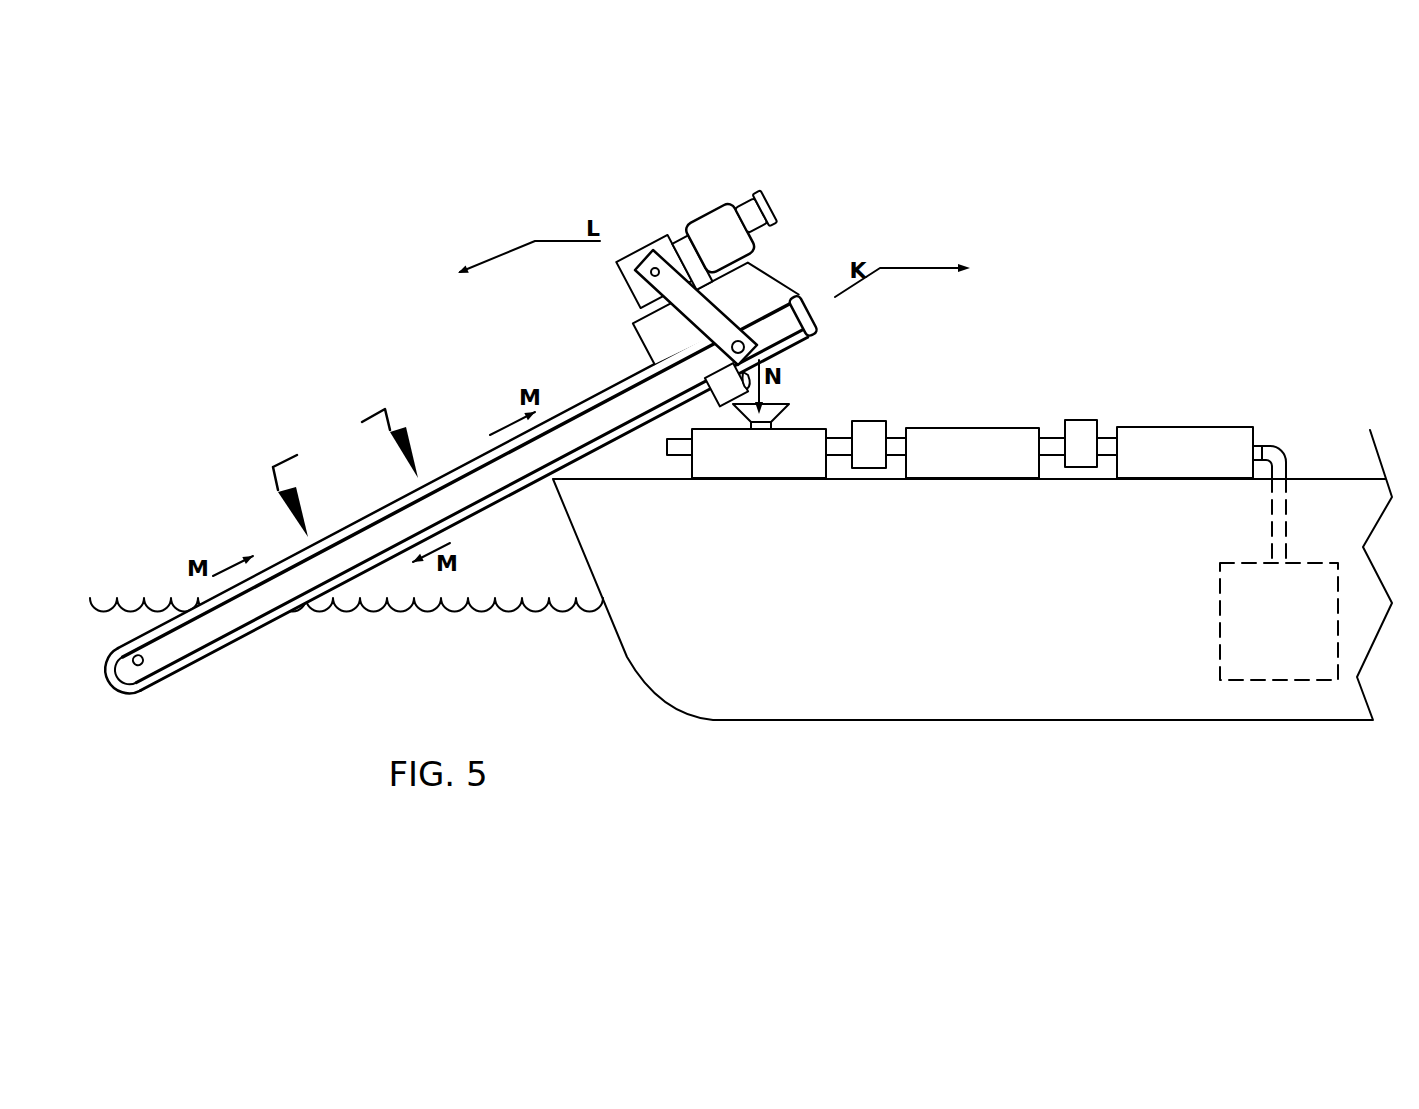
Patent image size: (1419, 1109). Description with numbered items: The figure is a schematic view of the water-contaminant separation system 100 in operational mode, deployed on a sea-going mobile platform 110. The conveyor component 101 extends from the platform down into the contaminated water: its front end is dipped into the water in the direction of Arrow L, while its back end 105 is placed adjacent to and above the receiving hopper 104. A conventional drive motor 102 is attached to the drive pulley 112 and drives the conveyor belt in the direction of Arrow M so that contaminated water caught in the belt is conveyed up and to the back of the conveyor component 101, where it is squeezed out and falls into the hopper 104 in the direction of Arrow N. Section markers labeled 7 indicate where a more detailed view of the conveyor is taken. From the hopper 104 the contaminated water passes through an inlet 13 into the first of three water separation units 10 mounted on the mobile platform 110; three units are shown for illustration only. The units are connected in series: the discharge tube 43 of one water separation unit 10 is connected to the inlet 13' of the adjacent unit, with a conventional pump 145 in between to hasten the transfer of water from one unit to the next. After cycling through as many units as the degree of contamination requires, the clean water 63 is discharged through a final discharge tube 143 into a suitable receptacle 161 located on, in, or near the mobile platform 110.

The section line of FIG. 7 is at (352, 471).
The water separation unit 10 is at (708, 461).
The inlet 13 is at (773, 442).
The inlet 13' is at (875, 489).
The discharge tube 43 is at (838, 436).
The clean water 63 is at (1267, 629).
The water-contaminant separation system 100 is at (372, 328).
The conveyor component 101 is at (242, 532).
The drive motor 102 is at (710, 222).
The receiving hopper 104 is at (783, 414).
The back end 105 is at (800, 298).
The mobile platform 110 is at (912, 595).
The drive pulley 112 is at (748, 370).
The final discharge tube 143 is at (1287, 465).
The pump 145 is at (872, 421).
The receptacle 161 is at (1220, 567).